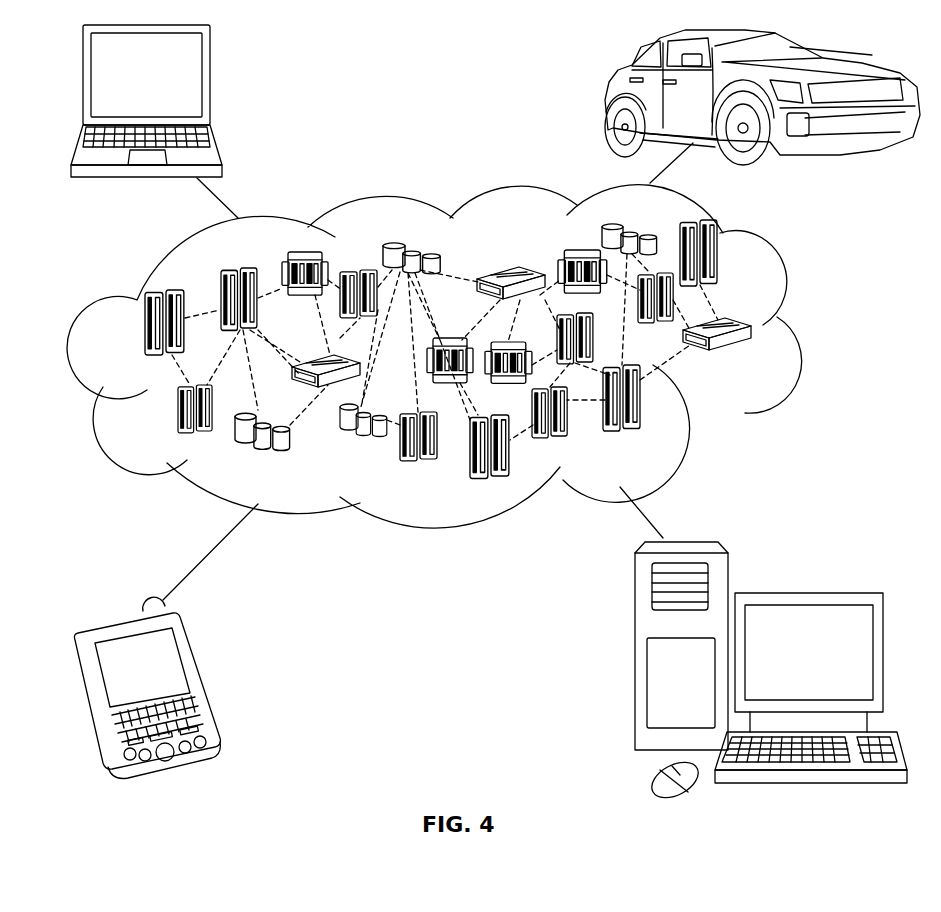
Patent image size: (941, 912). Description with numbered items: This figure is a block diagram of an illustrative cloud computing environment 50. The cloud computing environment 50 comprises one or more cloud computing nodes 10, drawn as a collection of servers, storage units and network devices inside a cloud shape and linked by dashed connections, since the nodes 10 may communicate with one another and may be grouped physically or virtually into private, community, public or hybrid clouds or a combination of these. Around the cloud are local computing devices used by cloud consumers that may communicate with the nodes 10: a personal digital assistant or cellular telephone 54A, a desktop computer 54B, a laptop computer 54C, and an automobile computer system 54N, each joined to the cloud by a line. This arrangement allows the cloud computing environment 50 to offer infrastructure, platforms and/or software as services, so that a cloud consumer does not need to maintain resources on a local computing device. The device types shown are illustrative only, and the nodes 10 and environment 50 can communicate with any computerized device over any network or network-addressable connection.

The cloud computing node 10 is at (760, 359).
The cloud computing environment 50 is at (803, 333).
The personal digital assistant or cellular telephone 54A is at (202, 681).
The desktop computer 54B is at (806, 593).
The laptop computer 54C is at (210, 80).
The automobile computer system 54N is at (608, 99).